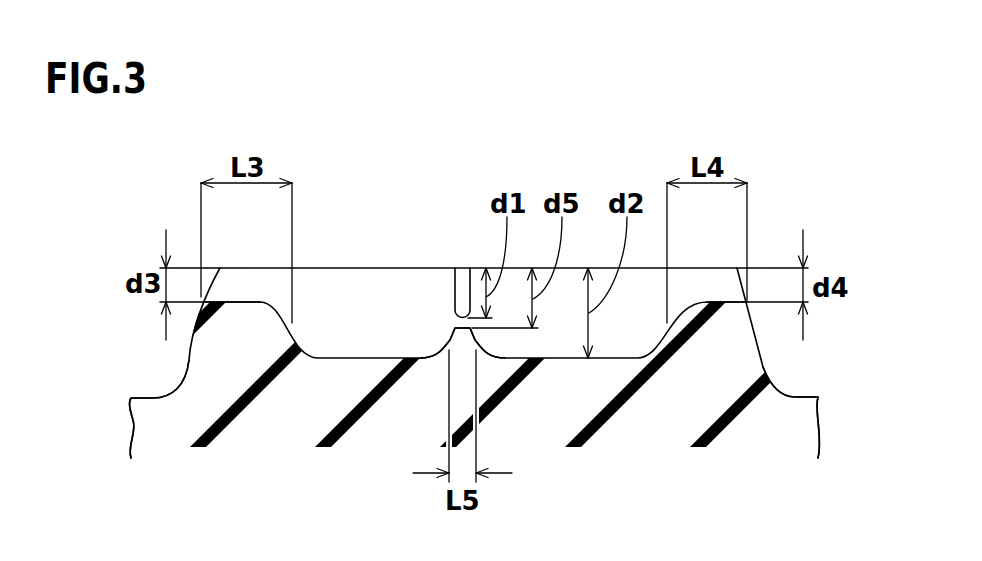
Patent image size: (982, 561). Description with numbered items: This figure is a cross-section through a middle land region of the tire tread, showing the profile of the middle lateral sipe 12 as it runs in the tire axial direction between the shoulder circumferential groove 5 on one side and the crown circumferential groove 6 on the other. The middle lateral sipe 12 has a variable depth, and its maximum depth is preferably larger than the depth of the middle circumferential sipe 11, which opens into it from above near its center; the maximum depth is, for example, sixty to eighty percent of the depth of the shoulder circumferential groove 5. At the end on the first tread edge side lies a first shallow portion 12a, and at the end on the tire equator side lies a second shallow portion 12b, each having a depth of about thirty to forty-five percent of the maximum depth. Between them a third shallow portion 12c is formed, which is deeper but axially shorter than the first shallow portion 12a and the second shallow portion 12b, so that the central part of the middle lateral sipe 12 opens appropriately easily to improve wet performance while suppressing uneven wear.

The shoulder circumferential groove 5 is at (150, 367).
The crown circumferential groove 6 is at (793, 378).
The middle circumferential sipe 11 is at (462, 267).
The middle lateral sipe 12 is at (350, 300).
The first shallow portion 12a is at (247, 300).
The second shallow portion 12b is at (710, 300).
The third shallow portion 12c is at (448, 335).